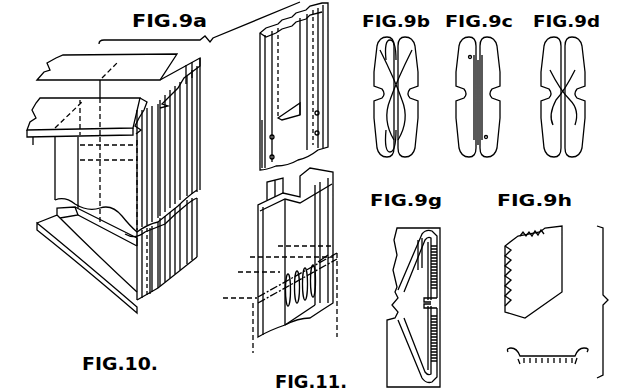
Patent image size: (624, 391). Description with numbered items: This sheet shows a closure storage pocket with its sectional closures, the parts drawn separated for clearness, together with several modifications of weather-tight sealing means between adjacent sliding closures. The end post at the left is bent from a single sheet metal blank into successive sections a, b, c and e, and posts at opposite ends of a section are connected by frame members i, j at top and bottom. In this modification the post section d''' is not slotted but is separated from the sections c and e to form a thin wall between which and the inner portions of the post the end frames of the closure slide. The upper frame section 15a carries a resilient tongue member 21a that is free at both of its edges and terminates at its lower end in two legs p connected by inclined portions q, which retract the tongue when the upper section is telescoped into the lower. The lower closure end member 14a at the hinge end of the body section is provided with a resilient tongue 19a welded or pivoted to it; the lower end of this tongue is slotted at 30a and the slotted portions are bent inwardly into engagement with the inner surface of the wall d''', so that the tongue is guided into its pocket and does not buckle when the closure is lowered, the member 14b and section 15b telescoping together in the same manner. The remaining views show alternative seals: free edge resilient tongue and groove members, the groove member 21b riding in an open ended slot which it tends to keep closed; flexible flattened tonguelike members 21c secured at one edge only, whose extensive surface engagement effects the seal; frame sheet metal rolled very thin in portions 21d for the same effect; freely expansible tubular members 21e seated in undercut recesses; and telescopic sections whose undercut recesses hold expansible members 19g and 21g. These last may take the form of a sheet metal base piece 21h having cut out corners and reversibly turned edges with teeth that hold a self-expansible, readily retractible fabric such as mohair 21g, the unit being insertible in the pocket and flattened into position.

In FIG. 9A, the frame member i is at (102, 95).
In FIG. 9A, the frame member j is at (85, 252).
In FIG. 9A, the post section a is at (66, 172).
In FIG. 9A, the post section b is at (85, 184).
In FIG. 9A, the post section c is at (138, 113).
In FIG. 9A, the post section e is at (180, 83).
In FIG. 9A, the post section wall d''' is at (257, 269).
In FIG. 9A, the resilient tongue member 21a is at (292, 58).
In FIG. 9A, the inclined portions q is at (282, 117).
In FIG. 9A, the upper frame section 15a is at (262, 133).
In FIG. 9A, the legs p is at (260, 155).
In FIG. 9A, the lower closure end member 14a is at (258, 227).
In FIG. 9A, the resilient tongue 19a is at (301, 270).
In FIG. 9A, the closure end member 14b is at (299, 299).
In FIG. 9A, the slots 30a is at (297, 312).
In FIG. 9A, the closure frame section 15b is at (316, 303).
In FIG. 9B, the groove member 21b is at (410, 72).
In FIG. 9B, the flexible flattened tonguelike member 21c is at (416, 96).
In FIG. 9C, the flexible flattened tonguelike member 21c is at (445, 128).
In FIG. 9D, the thin rolled portions 21d is at (562, 122).
In FIG. 9D, the freely expansible members 21e is at (578, 97).
In FIG. 9G, the expansible member 19g is at (440, 268).
In FIG. 9G, the expansible member 21g is at (440, 332).
In FIG. 9H, the expansible member 21g is at (548, 368).
In FIG. 9H, the sheet metal base piece 21h is at (566, 352).